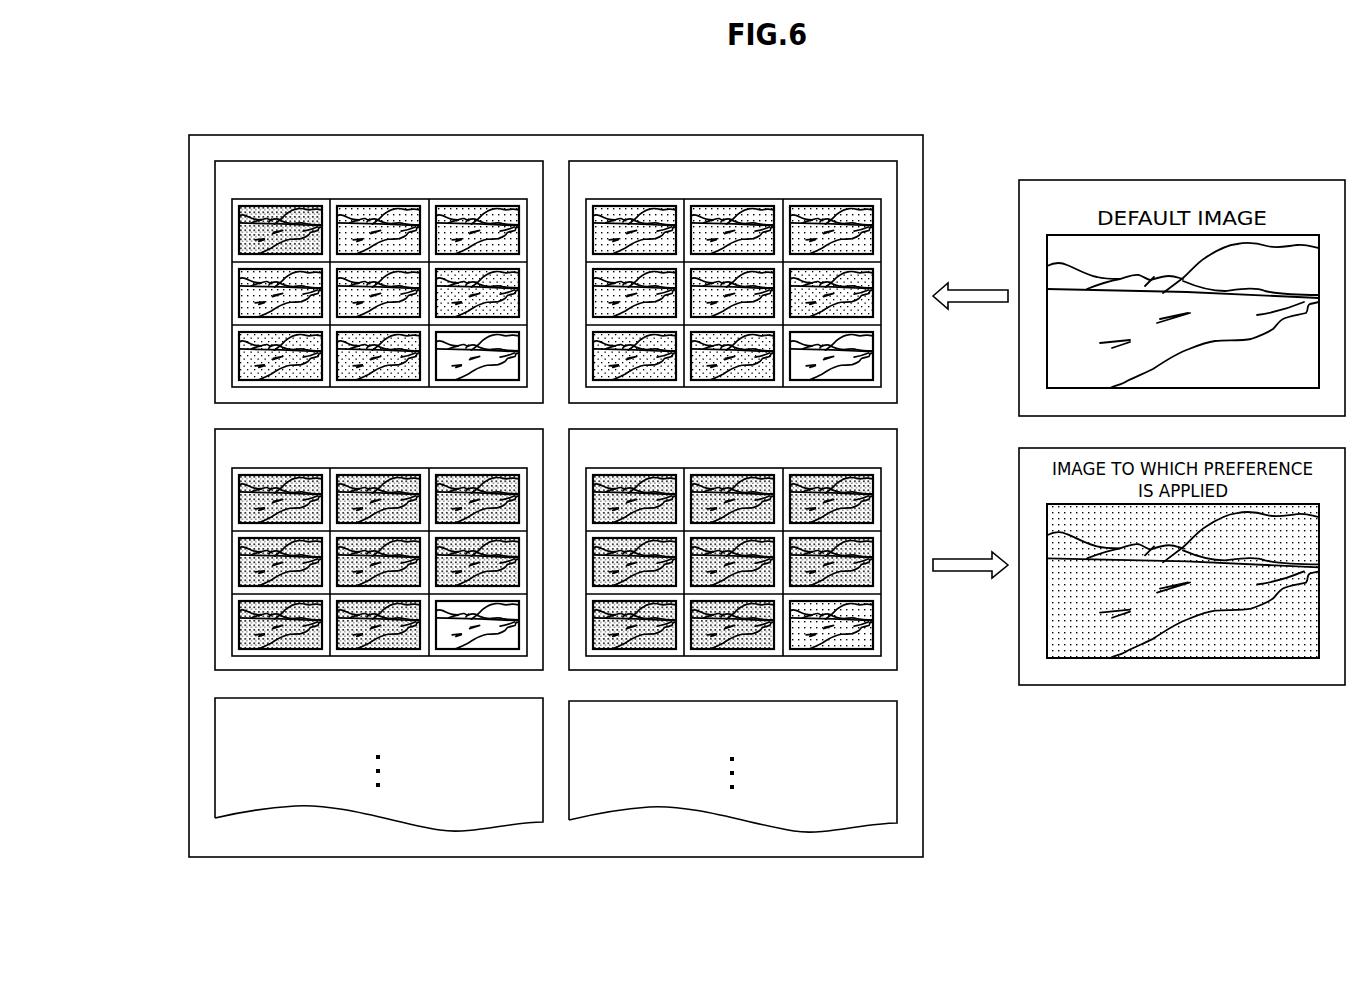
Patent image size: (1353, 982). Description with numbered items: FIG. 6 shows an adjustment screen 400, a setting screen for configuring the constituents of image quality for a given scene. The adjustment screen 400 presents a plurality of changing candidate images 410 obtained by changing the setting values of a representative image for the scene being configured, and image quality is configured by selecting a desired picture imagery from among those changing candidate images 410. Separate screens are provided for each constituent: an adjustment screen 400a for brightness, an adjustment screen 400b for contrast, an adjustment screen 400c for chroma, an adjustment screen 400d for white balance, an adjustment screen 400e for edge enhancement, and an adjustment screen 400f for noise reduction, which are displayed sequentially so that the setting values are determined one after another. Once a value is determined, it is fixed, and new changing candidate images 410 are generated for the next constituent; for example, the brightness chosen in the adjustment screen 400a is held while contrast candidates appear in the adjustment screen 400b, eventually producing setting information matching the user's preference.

The adjustment screen 400 is at (555, 133).
The adjustment screen for brightness 400a is at (330, 282).
The adjustment screen for contrast 400b is at (897, 198).
The adjustment screen for chroma 400c is at (215, 461).
The adjustment screen for white balance 400d is at (897, 466).
The adjustment screen for edge enhancement 400e is at (215, 732).
The adjustment screen for noise reduction 400f is at (897, 735).
The changing candidate image 410 is at (239, 237).